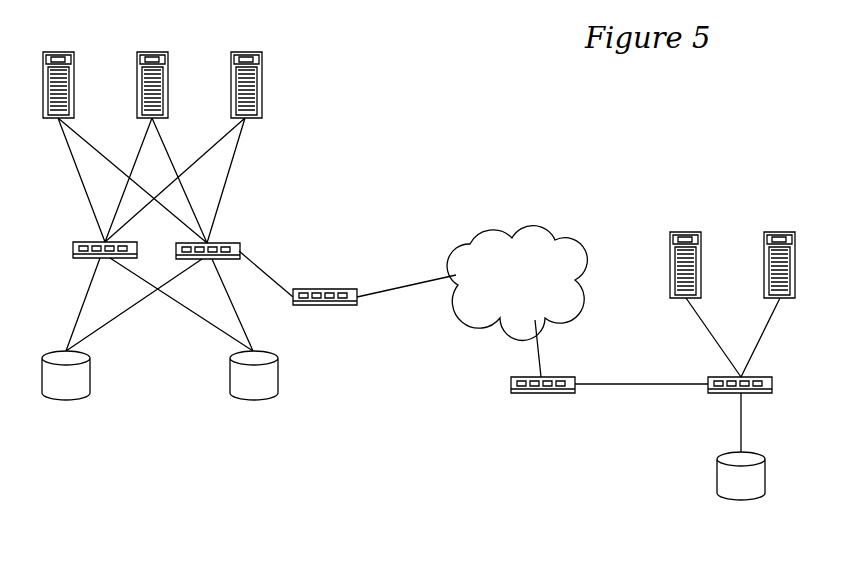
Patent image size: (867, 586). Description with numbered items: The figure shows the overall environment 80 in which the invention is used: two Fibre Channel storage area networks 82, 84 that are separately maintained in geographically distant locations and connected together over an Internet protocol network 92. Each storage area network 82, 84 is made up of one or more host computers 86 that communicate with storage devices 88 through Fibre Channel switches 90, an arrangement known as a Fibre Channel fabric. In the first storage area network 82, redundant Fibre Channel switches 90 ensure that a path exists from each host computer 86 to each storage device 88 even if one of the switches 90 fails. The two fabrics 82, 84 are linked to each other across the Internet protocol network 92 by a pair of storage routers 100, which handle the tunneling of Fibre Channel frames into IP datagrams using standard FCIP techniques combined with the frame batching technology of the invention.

The storage network system 80 is at (461, 73).
The storage area network 82 is at (307, 169).
The storage area network 84 is at (668, 432).
The host computer 86 is at (246, 52).
The storage device 88 is at (66, 400).
The Fibre Channel switch 90 is at (90, 242).
The Internet protocol network 92 is at (534, 223).
The storage router 100 is at (313, 288).